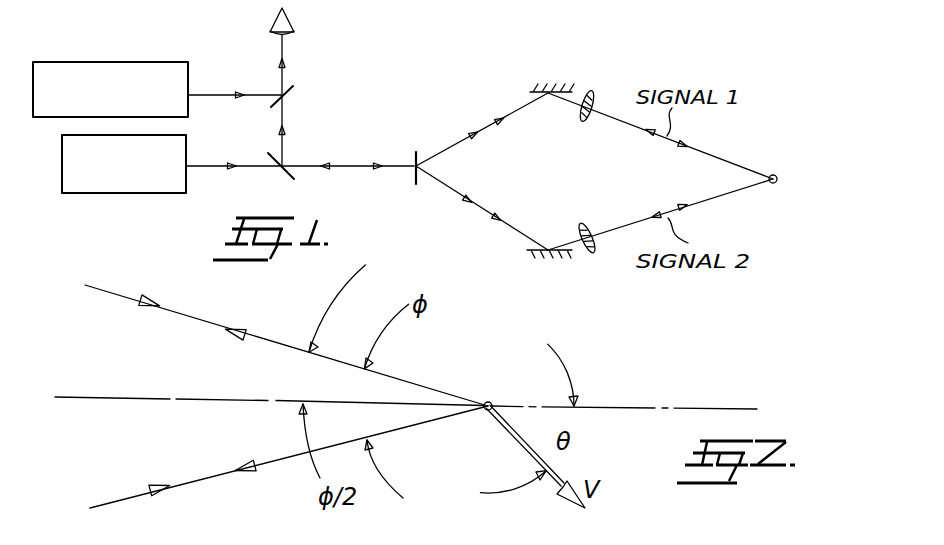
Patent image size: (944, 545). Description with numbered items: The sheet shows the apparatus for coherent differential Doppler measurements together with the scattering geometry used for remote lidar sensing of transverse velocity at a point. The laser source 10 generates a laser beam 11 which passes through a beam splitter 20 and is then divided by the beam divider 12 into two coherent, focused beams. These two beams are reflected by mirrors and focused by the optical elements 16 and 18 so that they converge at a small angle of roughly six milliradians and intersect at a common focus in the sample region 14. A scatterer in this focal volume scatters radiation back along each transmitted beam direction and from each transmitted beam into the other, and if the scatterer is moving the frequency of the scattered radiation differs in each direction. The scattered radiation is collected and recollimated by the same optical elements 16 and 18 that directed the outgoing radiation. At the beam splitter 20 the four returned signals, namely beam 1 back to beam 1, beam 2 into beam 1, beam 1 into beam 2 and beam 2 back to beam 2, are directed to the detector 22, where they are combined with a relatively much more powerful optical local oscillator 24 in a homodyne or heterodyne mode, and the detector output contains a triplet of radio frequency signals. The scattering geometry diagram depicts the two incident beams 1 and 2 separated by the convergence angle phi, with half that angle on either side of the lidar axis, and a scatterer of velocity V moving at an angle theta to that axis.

In FIG. 1, the laser source 10 is at (84, 194).
In FIG. 1, the laser beam 11 is at (232, 169).
In FIG. 1, the beam divider 12 is at (413, 155).
In FIG. 1, the sample region 14 is at (773, 174).
In FIG. 1, the optical element 16 is at (588, 91).
In FIG. 1, the optical element 18 is at (590, 253).
In FIG. 1, the beam splitter 20 is at (270, 177).
In FIG. 1, the detector 22 is at (303, 13).
In FIG. 1, the local oscillator 24 is at (136, 62).
In FIG. 2, the first transmitted beam 1 is at (278, 339).
In FIG. 2, the second transmitted beam 2 is at (278, 466).